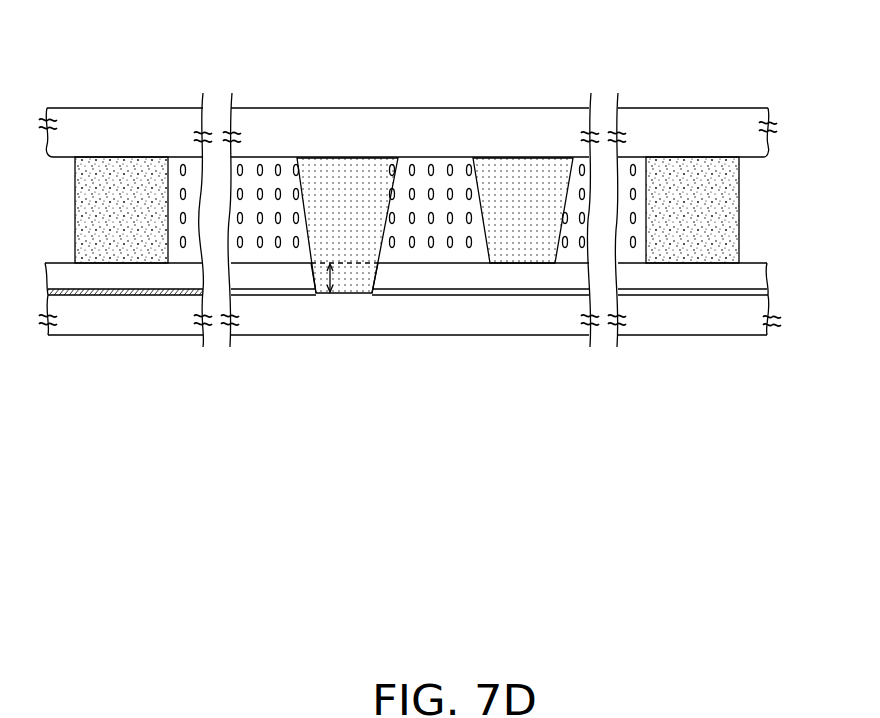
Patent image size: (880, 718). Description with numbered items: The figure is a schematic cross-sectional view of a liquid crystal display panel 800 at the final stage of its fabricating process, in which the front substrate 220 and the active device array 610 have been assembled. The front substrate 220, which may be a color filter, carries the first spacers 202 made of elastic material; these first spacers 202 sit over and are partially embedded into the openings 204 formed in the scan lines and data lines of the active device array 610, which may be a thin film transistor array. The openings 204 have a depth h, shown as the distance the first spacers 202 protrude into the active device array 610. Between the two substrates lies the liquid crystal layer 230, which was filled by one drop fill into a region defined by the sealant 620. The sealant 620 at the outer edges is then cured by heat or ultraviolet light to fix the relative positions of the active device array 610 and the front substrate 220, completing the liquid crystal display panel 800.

The front substrate 220 is at (128, 122).
The first spacers 202 is at (345, 168).
The sealant 620 is at (728, 205).
The active device array 610 is at (788, 263).
The liquid crystal display panel 800 is at (440, 204).
The liquid crystal layer 230 is at (268, 242).
The openings 204 is at (373, 278).